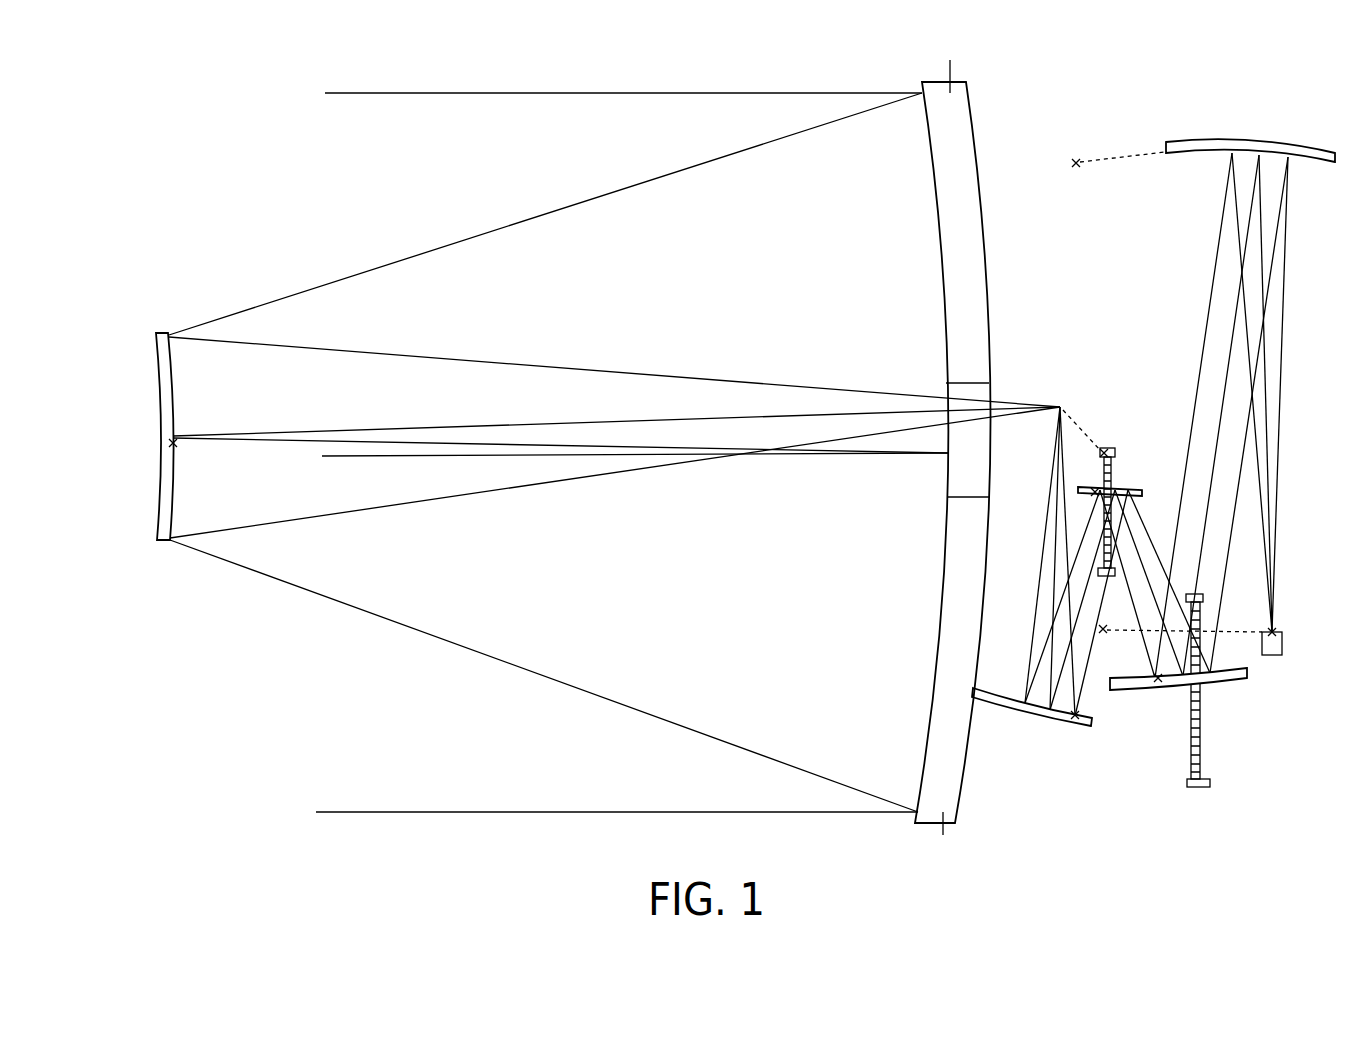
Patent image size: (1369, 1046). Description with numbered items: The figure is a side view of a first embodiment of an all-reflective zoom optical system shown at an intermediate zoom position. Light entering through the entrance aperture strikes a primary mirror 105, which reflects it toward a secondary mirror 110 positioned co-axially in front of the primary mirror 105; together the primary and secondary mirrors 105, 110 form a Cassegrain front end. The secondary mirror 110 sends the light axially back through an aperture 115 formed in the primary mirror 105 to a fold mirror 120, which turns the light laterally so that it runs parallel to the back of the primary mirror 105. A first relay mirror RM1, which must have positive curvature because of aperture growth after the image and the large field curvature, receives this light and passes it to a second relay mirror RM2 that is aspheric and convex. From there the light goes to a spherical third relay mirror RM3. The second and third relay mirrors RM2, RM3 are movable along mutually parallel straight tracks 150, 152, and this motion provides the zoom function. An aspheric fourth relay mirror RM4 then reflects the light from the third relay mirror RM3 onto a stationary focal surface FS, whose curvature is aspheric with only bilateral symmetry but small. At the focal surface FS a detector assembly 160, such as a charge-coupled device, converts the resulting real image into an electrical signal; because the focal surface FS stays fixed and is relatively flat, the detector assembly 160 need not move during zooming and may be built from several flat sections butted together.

The primary mirror 105 is at (963, 780).
The secondary mirror 110 is at (162, 543).
The aperture 115 is at (963, 497).
The fold mirror 120 is at (1063, 405).
The straight track 150 is at (1105, 478).
The straight track 152 is at (1203, 766).
The detector assembly 160 is at (1282, 656).
The first relay mirror RM1 is at (1093, 722).
The second relay mirror RM2 is at (1127, 487).
The third relay mirror RM3 is at (1237, 682).
The fourth relay mirror RM4 is at (1245, 142).
The focal surface FS is at (1283, 630).